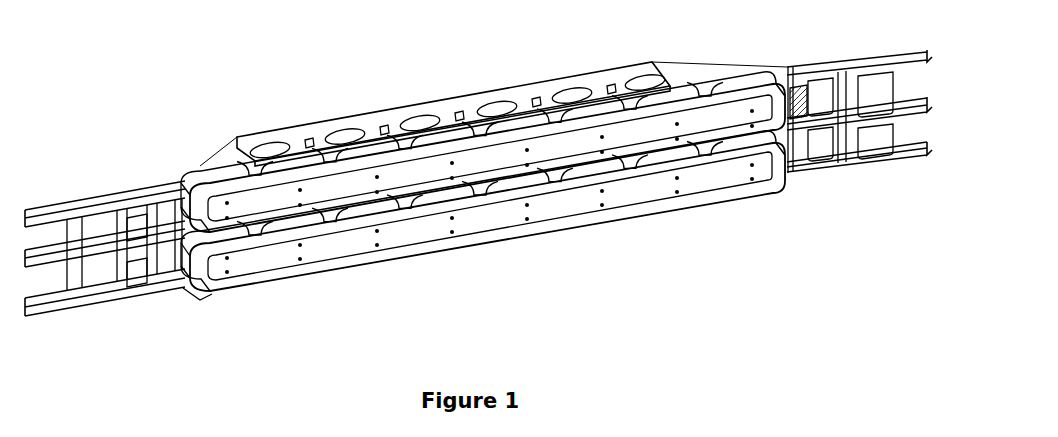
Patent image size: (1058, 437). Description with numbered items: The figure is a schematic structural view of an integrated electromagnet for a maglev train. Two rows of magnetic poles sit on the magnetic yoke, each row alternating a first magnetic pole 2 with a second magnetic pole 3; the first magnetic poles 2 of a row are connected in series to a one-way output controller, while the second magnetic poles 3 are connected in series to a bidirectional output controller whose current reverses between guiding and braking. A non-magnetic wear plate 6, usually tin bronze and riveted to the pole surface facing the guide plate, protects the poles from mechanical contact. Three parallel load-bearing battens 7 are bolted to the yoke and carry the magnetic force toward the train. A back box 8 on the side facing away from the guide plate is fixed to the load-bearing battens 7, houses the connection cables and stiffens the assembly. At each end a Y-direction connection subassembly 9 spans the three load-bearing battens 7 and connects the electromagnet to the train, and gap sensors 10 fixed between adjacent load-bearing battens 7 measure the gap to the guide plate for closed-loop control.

The first magnetic pole 2 is at (203, 197).
The second magnetic pole 3 is at (202, 280).
The wear plate 6 is at (313, 197).
The load-bearing batten 7 is at (125, 215).
The back box 8 is at (448, 113).
The Y-direction connection subassembly 9 is at (817, 98).
The gap sensor 10 is at (882, 88).